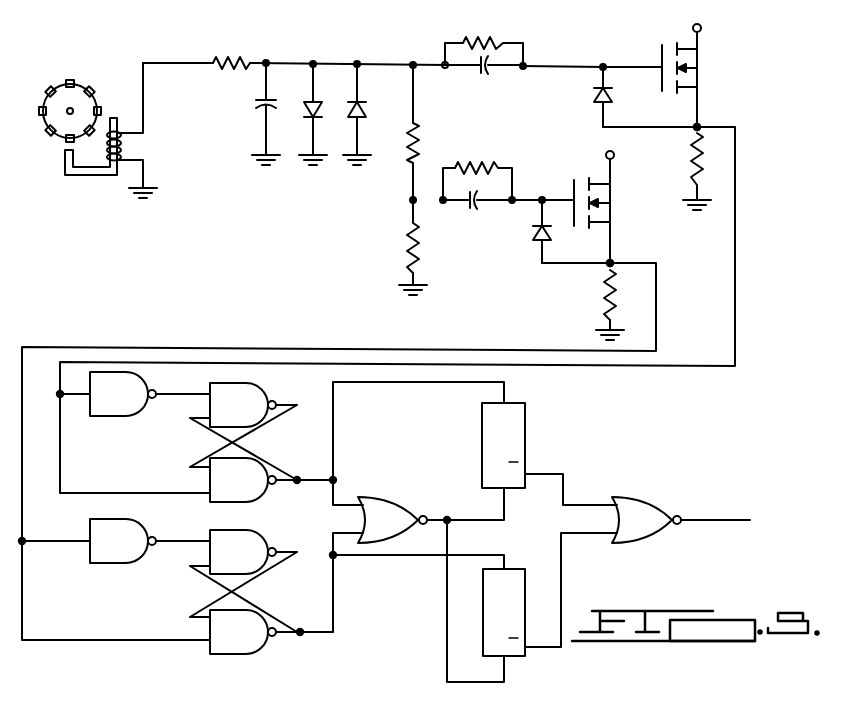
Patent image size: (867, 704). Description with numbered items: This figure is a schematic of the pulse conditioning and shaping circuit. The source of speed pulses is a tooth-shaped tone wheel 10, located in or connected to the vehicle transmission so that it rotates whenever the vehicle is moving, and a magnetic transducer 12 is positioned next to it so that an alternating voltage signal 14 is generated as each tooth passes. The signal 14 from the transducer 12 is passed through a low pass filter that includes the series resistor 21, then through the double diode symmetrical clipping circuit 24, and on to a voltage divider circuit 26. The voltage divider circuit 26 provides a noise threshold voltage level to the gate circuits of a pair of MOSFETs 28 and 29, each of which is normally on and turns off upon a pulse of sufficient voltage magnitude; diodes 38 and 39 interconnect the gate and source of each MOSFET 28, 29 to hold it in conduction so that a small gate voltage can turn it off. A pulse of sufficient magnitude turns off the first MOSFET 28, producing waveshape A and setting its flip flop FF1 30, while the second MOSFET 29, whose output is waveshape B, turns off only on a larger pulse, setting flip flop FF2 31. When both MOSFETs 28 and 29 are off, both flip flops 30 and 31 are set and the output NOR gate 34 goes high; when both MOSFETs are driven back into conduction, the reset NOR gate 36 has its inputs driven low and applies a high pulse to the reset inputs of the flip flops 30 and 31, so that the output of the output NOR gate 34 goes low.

The tone wheel 10 is at (115, 45).
The magnetic transducer 12 is at (123, 149).
The series resistor 21 is at (246, 62).
The double diode symmetrical clipping circuit 24 is at (257, 107).
The voltage divider circuit 26 is at (398, 202).
The first MOSFET 28 is at (703, 63).
The second MOSFET 29 is at (614, 214).
The diode 38 is at (594, 97).
The diode 39 is at (534, 237).
The waveshape A is at (703, 122).
The waveshape B is at (616, 260).
The reset NOR gate 36 is at (393, 493).
The flip flop FF1 30 is at (527, 423).
The flip flop FF2 31 is at (545, 554).
The output NOR gate 34 is at (641, 493).
The alternating voltage signal 14 is at (593, 696).